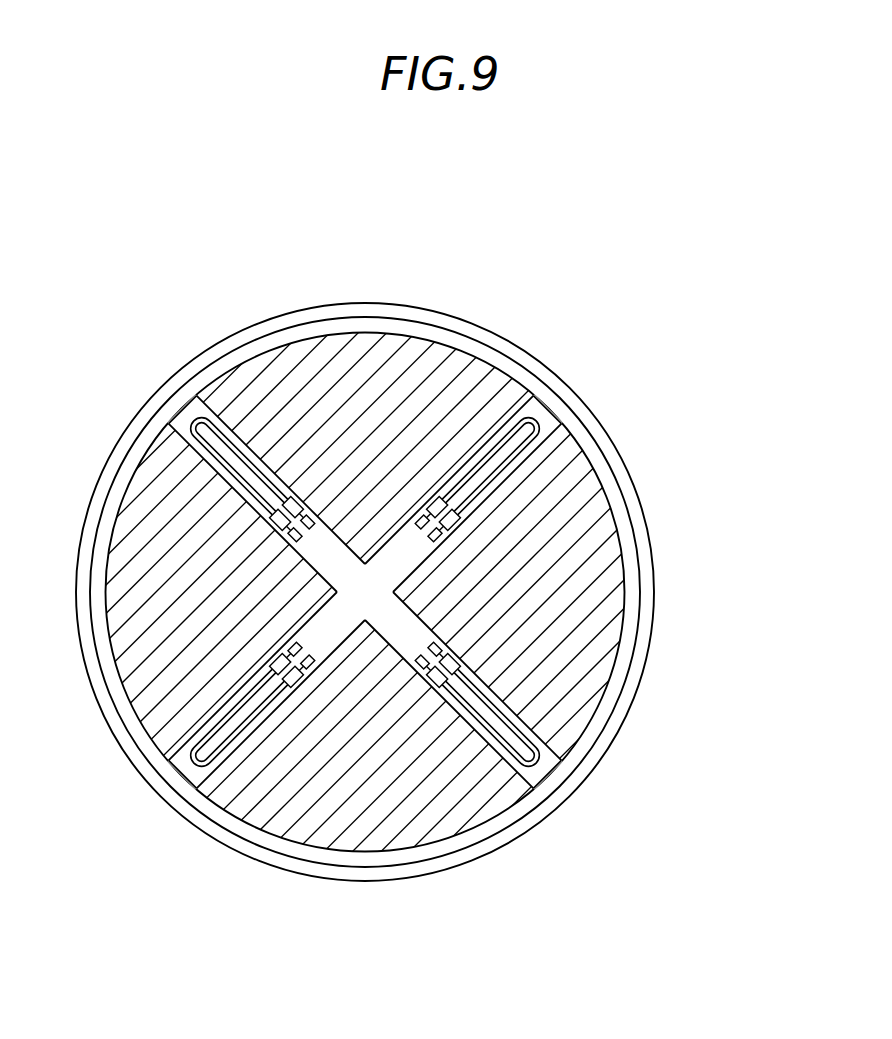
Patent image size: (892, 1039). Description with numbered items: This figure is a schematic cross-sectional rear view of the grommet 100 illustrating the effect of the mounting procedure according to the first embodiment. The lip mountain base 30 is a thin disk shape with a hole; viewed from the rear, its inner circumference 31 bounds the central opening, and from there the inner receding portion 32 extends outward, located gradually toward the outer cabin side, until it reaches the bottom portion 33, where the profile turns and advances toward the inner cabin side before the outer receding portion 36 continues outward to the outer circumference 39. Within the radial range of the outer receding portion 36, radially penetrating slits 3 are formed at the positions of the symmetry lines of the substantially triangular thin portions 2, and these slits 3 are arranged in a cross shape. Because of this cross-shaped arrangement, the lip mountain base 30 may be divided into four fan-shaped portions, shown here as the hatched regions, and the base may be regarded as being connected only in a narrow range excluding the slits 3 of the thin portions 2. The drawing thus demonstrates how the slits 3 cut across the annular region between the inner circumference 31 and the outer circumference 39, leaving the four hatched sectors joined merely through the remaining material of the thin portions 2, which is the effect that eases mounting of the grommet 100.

The semiconductor device 100 is at (136, 237).
The lip mountain base 30 is at (748, 298).
The outer circumference 39 is at (508, 333).
The thin portion 2 is at (446, 450).
The outer receding portion 36 is at (446, 450).
The slit 3 is at (540, 420).
The bottom portion 33 is at (455, 520).
The inner receding portion 32 is at (440, 548).
The inner circumference 31 is at (433, 570).